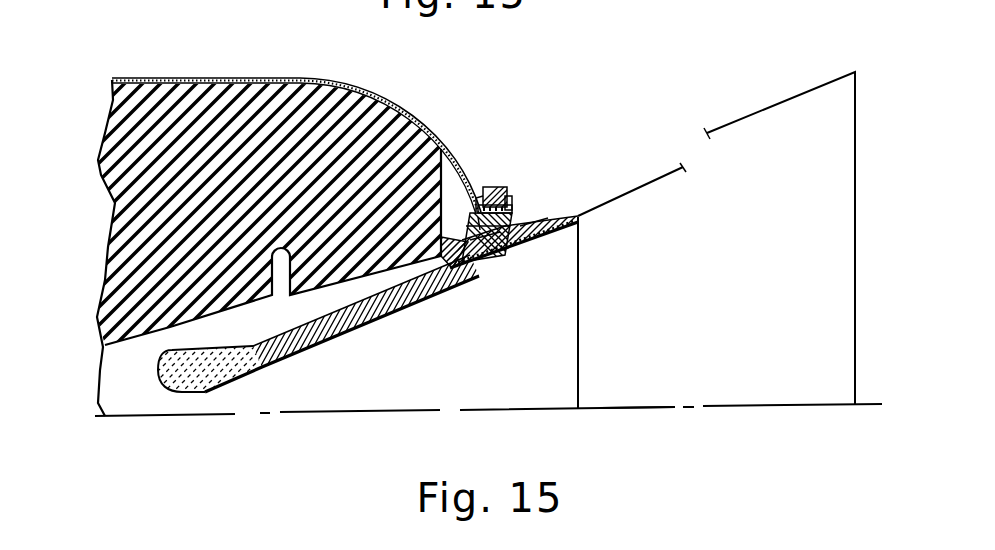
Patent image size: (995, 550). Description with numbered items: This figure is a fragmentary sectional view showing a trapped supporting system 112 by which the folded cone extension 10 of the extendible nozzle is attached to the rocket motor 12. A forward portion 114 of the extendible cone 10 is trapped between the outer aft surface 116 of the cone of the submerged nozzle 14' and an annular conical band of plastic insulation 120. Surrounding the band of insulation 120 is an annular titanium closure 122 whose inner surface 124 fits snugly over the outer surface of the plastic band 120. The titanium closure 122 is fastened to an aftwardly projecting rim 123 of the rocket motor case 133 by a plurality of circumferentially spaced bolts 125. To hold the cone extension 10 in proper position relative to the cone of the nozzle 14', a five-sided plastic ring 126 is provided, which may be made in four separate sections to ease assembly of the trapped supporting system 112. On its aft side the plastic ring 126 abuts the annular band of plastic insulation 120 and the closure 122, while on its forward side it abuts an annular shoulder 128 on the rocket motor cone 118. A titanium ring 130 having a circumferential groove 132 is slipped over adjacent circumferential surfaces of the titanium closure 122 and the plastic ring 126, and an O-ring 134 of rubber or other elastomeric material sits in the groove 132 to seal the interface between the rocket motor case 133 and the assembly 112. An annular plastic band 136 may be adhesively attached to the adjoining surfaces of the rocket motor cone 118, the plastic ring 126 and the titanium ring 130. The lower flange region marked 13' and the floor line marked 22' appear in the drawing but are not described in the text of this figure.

The folded cone extension 10 is at (658, 153).
The door panel 12 is at (242, 72).
The inner panel flange 13' is at (216, 370).
The submerged nozzle 14' is at (374, 365).
The floor 22' is at (637, 388).
The trapped supporting system 112 is at (578, 178).
The forward portion 114 is at (552, 232).
The outer aft surface 116 is at (544, 217).
The rocket motor cone 118 is at (390, 304).
The annular conical band of plastic insulation 120 is at (578, 213).
The annular titanium closure 122 is at (497, 188).
The aftwardly projecting rim 123 is at (480, 195).
The inner surface 124 is at (525, 243).
The bolts 125 is at (512, 205).
The five-sided plastic ring 126 is at (483, 265).
The annular shoulder 128 is at (466, 262).
The titanium ring 130 is at (514, 216).
The circumferential groove 132 is at (497, 255).
The rocket motor case 133 is at (422, 103).
The O-ring 134 is at (478, 217).
The annular plastic band 136 is at (458, 246).